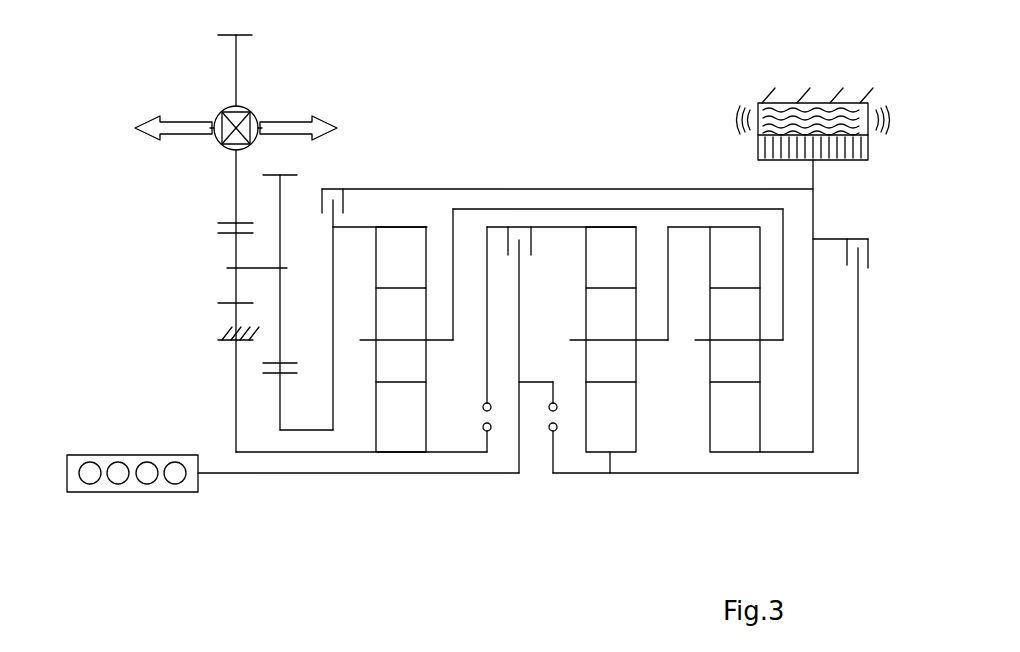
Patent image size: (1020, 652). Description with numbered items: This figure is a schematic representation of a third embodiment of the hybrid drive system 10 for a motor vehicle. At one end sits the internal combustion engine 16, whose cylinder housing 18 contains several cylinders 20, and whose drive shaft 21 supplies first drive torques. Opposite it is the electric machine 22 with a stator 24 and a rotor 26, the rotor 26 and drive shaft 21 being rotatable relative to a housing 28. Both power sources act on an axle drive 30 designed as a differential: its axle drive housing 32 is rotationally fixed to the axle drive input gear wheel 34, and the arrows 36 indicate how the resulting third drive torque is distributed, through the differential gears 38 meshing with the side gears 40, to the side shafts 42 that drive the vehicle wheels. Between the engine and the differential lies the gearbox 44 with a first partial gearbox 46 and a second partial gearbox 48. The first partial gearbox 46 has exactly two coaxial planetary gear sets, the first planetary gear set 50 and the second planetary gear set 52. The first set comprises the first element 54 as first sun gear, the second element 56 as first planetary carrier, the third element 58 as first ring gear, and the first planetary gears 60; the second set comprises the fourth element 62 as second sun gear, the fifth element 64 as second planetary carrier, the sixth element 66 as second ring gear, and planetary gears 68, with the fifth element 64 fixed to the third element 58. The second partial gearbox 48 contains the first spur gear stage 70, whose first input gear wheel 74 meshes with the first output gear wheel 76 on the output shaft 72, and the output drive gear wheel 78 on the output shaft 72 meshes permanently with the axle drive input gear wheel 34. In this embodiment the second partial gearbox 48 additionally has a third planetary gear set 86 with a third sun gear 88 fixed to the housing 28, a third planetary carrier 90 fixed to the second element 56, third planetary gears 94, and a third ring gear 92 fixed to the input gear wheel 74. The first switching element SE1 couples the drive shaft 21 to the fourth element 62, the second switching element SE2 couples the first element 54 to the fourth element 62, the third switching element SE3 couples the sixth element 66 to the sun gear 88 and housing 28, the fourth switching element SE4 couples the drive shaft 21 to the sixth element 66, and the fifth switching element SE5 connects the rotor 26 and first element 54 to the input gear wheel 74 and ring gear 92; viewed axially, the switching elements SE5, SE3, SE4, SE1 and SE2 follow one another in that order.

The hybrid drive system 10 is at (872, 60).
The internal combustion engine 16 is at (72, 450).
The cylinder housing 18 is at (100, 492).
The cylinders 20 is at (133, 487).
The drive shaft 21 is at (220, 470).
The electric machine 22 is at (738, 112).
The stator 24 is at (770, 104).
The rotor 26 is at (760, 148).
The housing 28 is at (218, 340).
The axle drive 30 is at (248, 58).
The axle drive housing 32 is at (256, 108).
The axle drive input gear wheel 34 is at (233, 50).
The arrows 36 is at (303, 125).
The differential gears 38 is at (230, 110).
The side gears 40 is at (215, 117).
The side shafts 42 is at (212, 138).
The gearbox 44 is at (890, 230).
The first partial gearbox 46 is at (864, 470).
The second partial gearbox 48 is at (190, 236).
The first planetary gear set 50 is at (727, 464).
The second planetary gear set 52 is at (619, 464).
The first element 54 is at (742, 438).
The second element 56 is at (772, 342).
The third element 58 is at (747, 243).
The first planetary gears 60 is at (723, 370).
The fourth element 62 is at (622, 438).
The fifth element 64 is at (650, 342).
The sixth element 66 is at (612, 233).
The planetary gears 68 is at (594, 362).
The first spur gear stage 70 is at (281, 446).
The output shaft 72 is at (287, 268).
The first input gear wheel 74 is at (282, 408).
The first output gear wheel 76 is at (281, 333).
The output drive gear wheel 78 is at (218, 302).
The third planetary gear set 86 is at (407, 210).
The third sun gear 88 is at (403, 442).
The third planetary carrier 90 is at (440, 342).
The third ring gear 92 is at (418, 232).
The third planetary gears 94 is at (390, 362).
The first switching element SE1 is at (546, 442).
The second switching element SE2 is at (871, 274).
The third switching element SE3 is at (485, 438).
The fourth switching element SE4 is at (537, 238).
The fifth switching element SE5 is at (348, 184).